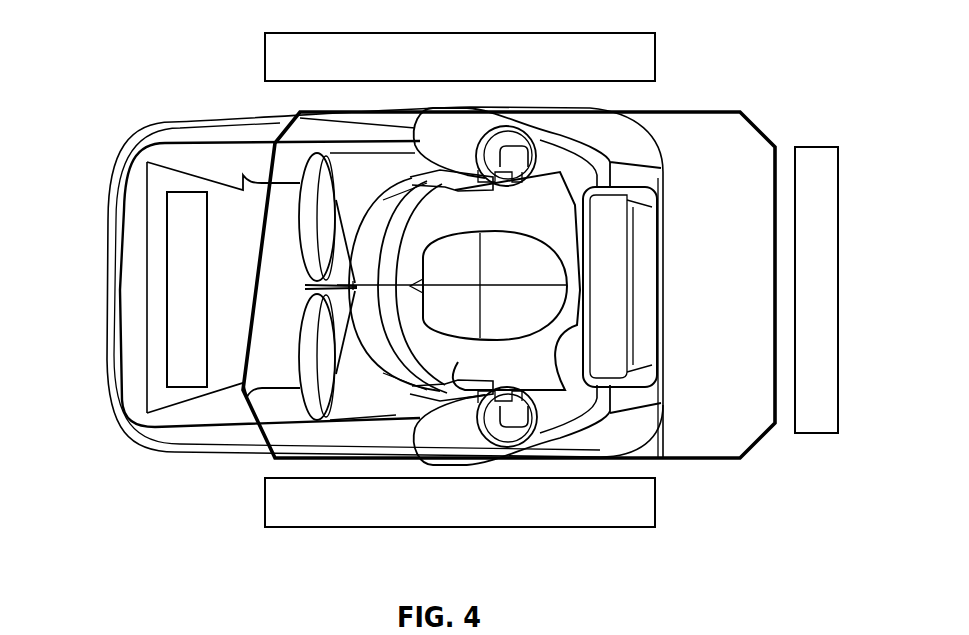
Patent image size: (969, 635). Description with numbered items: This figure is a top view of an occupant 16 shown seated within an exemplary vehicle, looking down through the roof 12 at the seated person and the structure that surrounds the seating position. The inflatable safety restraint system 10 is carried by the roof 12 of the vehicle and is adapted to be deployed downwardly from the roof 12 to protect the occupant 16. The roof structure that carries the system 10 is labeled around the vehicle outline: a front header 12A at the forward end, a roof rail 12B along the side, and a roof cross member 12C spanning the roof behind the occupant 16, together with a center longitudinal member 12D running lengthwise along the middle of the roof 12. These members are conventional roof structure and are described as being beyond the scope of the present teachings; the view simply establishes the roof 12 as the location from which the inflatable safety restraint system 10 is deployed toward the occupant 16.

The inflatable safety restraint system 10 is at (758, 122).
The roof 12 is at (668, 46).
The front header 12A is at (165, 300).
The roof rail 12B is at (263, 500).
The roof cross member 12C is at (839, 289).
The center longitudinal member 12D is at (263, 53).
The occupant 16 is at (517, 307).